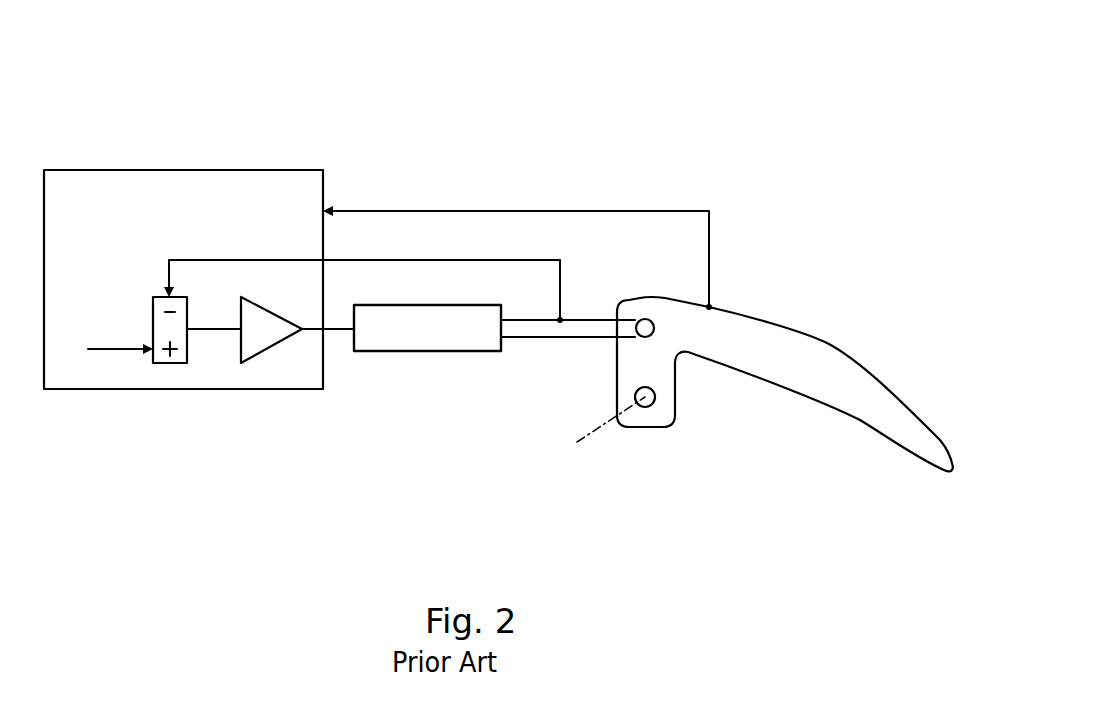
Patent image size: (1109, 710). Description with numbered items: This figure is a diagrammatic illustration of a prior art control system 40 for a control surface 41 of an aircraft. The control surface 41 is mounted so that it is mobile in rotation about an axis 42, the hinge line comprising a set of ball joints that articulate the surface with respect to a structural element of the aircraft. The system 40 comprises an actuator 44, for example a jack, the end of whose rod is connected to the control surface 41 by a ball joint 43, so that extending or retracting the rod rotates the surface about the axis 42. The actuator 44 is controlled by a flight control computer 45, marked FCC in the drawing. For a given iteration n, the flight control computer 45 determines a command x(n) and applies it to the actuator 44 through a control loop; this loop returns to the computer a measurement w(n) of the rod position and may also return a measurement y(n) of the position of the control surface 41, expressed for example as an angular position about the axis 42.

The control system 40 is at (728, 105).
The control surface 41 is at (828, 342).
The axis 42 is at (600, 430).
The ball joint 43 is at (645, 318).
The actuator 44 is at (422, 351).
The flight control computer 45 is at (242, 170).